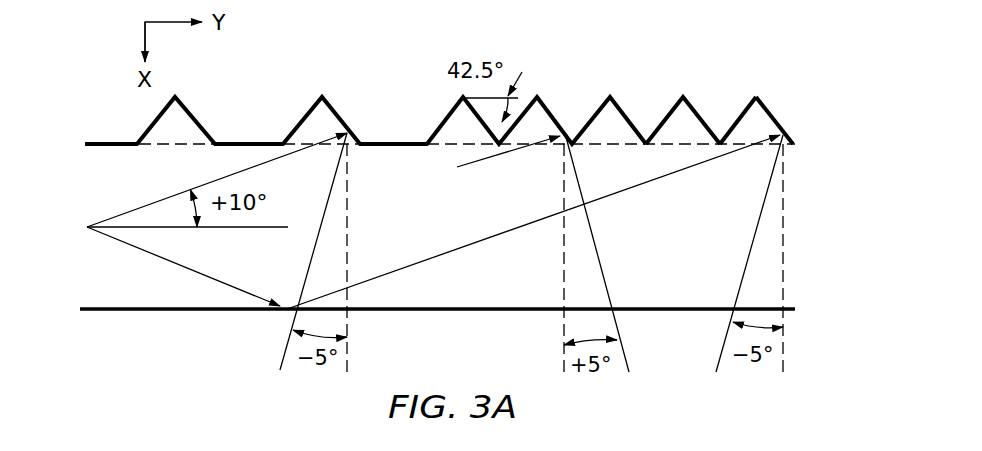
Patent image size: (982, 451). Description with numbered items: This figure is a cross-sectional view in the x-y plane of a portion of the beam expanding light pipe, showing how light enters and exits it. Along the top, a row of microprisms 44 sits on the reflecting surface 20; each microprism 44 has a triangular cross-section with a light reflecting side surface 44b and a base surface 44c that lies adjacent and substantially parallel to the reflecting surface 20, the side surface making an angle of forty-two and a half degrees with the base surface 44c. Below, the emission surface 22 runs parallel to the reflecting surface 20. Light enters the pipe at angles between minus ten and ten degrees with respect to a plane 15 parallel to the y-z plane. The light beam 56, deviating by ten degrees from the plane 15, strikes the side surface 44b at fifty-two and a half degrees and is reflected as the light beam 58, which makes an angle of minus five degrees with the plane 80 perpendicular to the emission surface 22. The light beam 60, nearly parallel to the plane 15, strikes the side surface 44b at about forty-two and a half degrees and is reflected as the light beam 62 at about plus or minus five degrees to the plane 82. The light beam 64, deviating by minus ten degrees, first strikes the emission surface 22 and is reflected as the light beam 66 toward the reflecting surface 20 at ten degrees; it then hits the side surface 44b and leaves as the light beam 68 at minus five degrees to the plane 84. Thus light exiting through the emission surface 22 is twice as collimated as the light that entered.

The plane 15 is at (467, 175).
The reflecting surface 20 is at (185, 143).
The emission surface 22 is at (437, 339).
The microprism 44 is at (685, 99).
The side surface 44b is at (700, 146).
The base surface 44c is at (730, 147).
The light beam 56 is at (217, 162).
The reflected light beam 58 is at (290, 251).
The light beam 60 is at (527, 110).
The reflected light beam 62 is at (627, 254).
The light beam 64 is at (183, 287).
The reflected light beam 66 is at (533, 240).
The reflected light beam 68 is at (731, 253).
The plane 80 is at (381, 259).
The plane 82 is at (537, 259).
The plane 84 is at (816, 259).